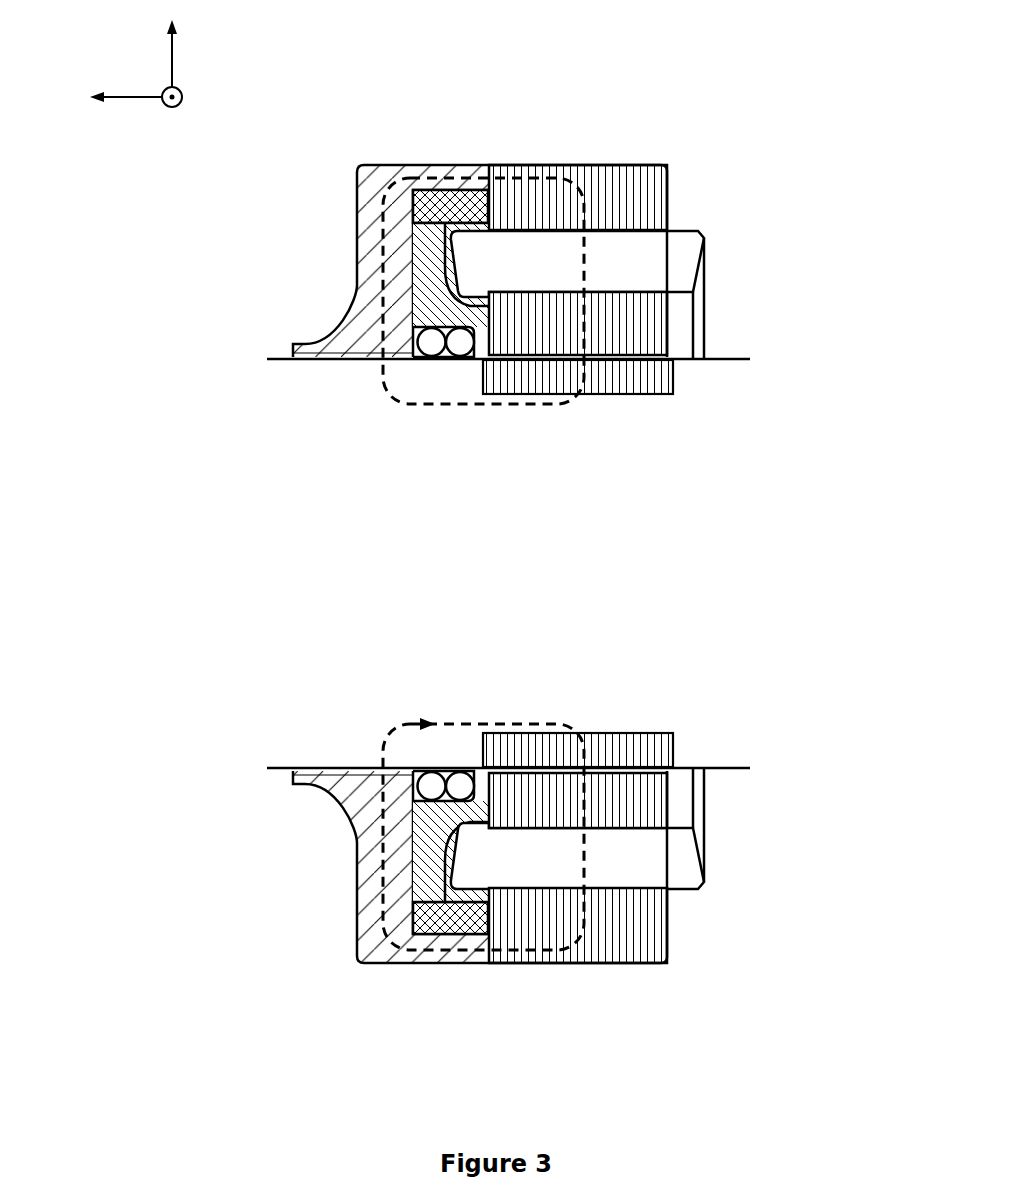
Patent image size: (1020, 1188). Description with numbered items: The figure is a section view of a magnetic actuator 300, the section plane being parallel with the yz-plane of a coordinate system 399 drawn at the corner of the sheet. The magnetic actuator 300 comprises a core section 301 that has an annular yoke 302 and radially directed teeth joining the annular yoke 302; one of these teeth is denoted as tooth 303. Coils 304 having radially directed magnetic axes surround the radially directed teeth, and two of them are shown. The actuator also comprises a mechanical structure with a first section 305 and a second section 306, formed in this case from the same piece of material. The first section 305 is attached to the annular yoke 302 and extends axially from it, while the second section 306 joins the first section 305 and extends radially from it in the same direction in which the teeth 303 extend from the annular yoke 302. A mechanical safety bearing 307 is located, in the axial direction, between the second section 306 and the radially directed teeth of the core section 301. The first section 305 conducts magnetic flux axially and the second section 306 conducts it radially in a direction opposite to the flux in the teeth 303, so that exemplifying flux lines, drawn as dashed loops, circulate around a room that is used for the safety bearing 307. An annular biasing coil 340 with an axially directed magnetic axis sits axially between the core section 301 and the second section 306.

The magnetic actuator 300 is at (262, 848).
The core section 301 is at (589, 164).
The annular yoke 302 is at (667, 178).
The radially directed tooth 303 is at (667, 320).
The coil 304 is at (697, 231).
The first section of the mechanical structure 305 is at (453, 163).
The second section of the mechanical structure 306 is at (357, 196).
The mechanical safety bearing 307 is at (417, 333).
The annular biasing coil 340 is at (477, 200).
The coordinate system 399 is at (151, 69).